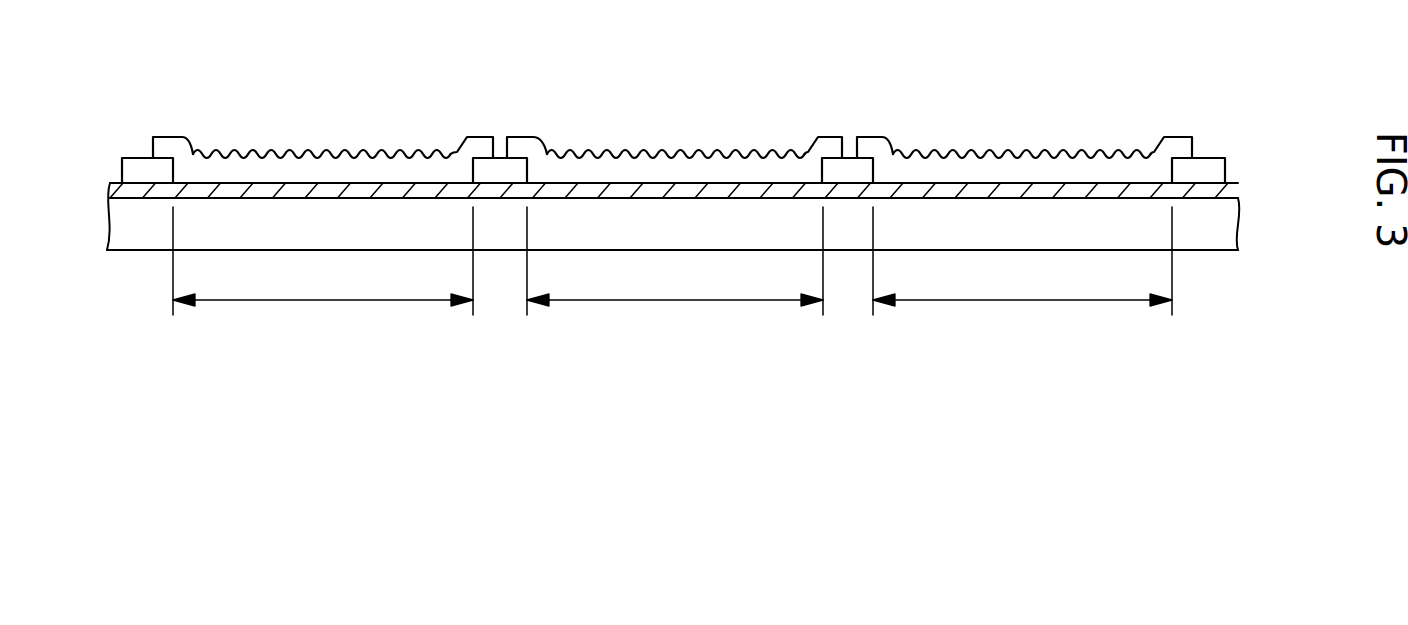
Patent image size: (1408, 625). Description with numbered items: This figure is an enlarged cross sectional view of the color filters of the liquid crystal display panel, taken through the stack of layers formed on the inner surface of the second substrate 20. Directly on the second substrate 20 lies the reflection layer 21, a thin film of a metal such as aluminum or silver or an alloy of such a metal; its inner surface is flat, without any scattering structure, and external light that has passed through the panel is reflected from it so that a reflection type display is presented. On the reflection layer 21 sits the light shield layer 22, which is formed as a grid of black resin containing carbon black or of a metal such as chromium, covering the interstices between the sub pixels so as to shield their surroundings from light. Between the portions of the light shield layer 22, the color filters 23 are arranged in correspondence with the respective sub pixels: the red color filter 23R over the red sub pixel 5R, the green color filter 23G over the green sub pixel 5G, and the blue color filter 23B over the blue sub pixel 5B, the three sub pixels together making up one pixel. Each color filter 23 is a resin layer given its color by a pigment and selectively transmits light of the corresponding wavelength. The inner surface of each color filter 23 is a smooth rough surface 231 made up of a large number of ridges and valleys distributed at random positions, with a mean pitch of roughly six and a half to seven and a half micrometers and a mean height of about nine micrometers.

The second substrate 20 is at (1228, 230).
The reflection layer 21 is at (1215, 195).
The light shield layer 22 is at (1213, 167).
The color filters 23 is at (705, 102).
The red color filter 23R is at (475, 138).
The green color filter 23G is at (828, 138).
The blue color filter 23B is at (1172, 138).
The smooth rough surface 231 is at (455, 130).
The red sub pixel 5R is at (323, 261).
The green sub pixel 5G is at (675, 261).
The blue sub pixel 5B is at (1022, 261).